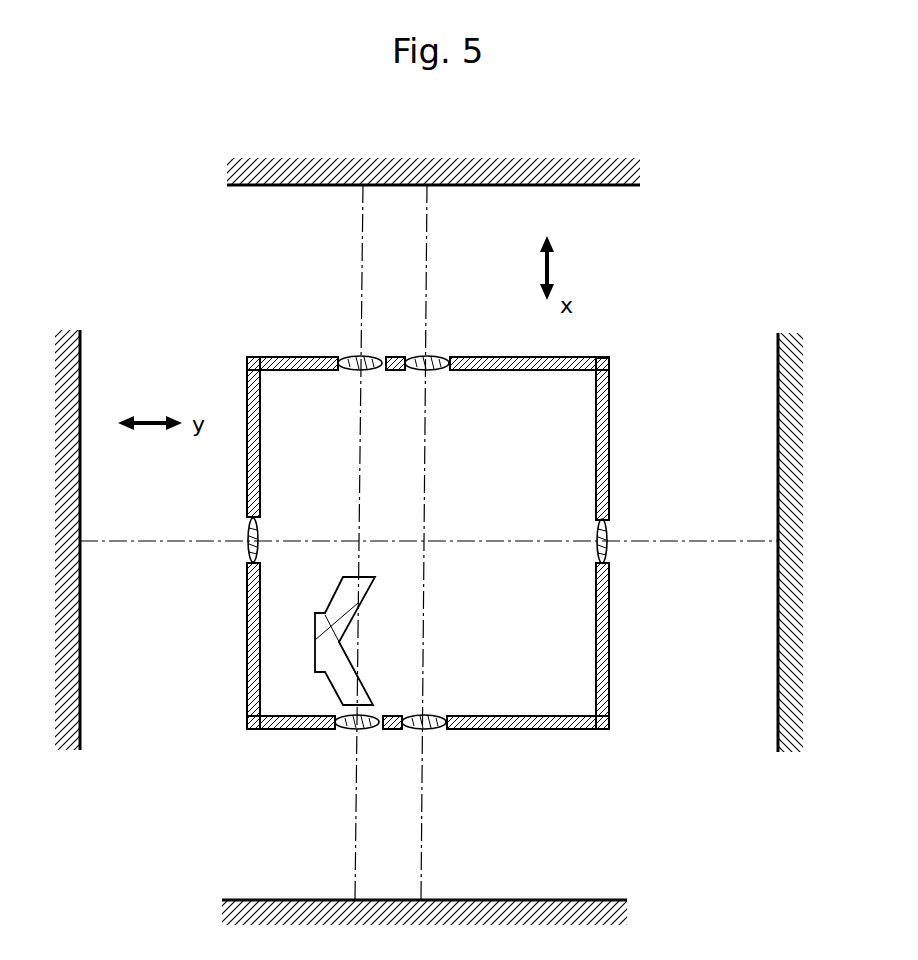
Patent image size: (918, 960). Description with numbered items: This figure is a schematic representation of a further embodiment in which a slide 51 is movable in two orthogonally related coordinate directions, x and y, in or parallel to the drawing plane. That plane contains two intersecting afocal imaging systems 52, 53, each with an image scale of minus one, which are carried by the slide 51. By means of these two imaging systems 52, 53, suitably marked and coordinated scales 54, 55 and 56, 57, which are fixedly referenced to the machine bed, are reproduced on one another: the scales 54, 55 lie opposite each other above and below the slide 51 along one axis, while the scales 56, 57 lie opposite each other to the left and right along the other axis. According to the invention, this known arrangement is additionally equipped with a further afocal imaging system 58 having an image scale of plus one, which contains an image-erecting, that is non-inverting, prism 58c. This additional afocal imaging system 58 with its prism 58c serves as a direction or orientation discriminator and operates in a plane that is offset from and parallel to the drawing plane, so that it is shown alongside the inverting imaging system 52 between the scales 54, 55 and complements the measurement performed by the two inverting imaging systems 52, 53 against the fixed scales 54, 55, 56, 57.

The slide 51 is at (626, 435).
The afocal imaging system 52 is at (432, 371).
The afocal imaging system 53 is at (256, 548).
The scale 54 is at (617, 186).
The scale 55 is at (602, 900).
The scale 56 is at (80, 360).
The scale 57 is at (775, 731).
The afocal imaging system 58 is at (345, 371).
The image-erecting prism 58c is at (312, 667).